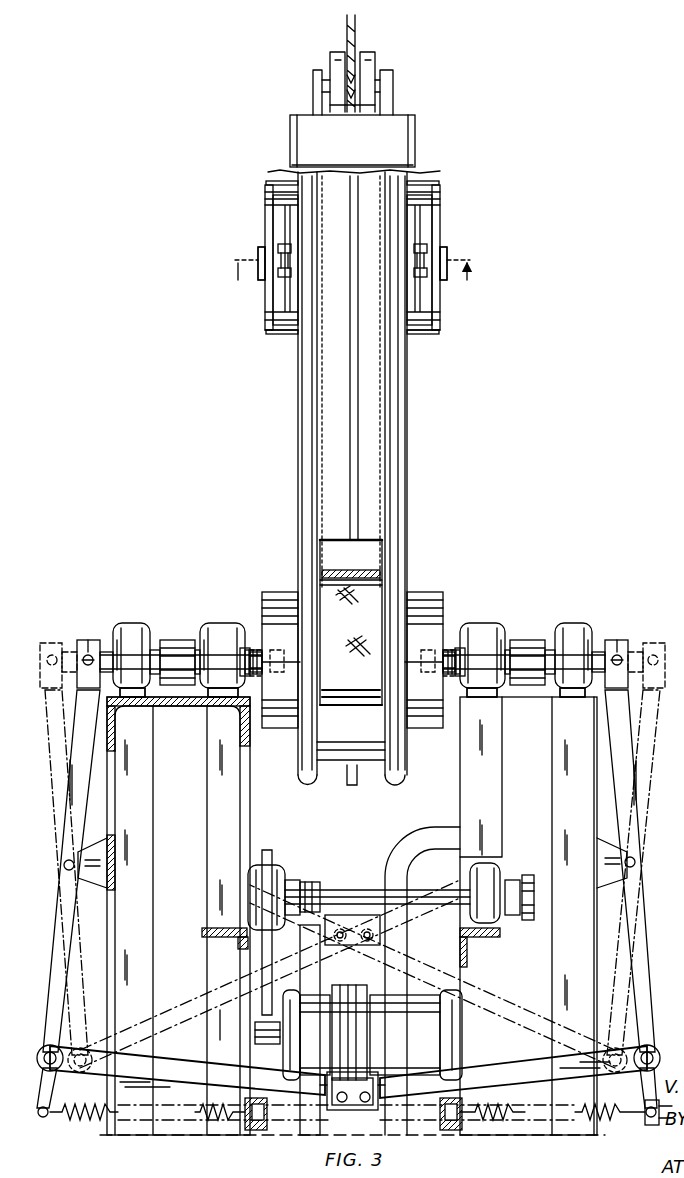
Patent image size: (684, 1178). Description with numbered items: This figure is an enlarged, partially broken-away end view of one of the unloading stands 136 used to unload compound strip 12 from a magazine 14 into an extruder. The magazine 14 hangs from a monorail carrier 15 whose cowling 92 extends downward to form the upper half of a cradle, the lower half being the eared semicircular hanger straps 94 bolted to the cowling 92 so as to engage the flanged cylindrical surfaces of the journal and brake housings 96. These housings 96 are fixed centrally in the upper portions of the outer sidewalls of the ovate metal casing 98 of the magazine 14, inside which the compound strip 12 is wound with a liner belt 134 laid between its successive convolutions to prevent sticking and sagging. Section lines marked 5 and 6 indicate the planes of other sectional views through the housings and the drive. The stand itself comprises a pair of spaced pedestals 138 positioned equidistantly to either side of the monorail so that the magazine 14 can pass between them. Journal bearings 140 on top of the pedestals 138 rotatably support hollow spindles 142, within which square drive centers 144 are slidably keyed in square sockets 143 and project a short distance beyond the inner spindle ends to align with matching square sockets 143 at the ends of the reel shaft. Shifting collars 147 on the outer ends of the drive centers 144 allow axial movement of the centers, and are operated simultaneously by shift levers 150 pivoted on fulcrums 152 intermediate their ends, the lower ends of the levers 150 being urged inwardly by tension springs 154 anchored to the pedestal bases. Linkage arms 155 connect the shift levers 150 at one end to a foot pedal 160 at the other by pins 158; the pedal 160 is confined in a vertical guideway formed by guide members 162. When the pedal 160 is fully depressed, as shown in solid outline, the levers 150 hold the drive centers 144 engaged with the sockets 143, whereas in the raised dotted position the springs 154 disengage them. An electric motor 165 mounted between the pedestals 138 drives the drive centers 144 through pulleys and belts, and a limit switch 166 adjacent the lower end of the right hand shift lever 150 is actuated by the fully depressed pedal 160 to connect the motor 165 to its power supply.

The section line 5- 5 is at (351, 282).
The section line 6- 6 is at (352, 676).
The compound strip 12 is at (385, 563).
The compound strip magazine 14 is at (408, 438).
The monorail carrier 15 is at (418, 144).
The cowling 92 is at (432, 178).
The hanger strap 94 is at (430, 334).
The journal and brake housing 96 is at (265, 232).
The ovate metal casing 98 is at (407, 470).
The liner belt 134 is at (325, 592).
The unloading stand 136 is at (568, 500).
The pedestal 138 is at (438, 808).
The journal bearing 140 is at (568, 698).
The hollow spindle 142 is at (602, 640).
The square socket 143 is at (424, 655).
The square drive center 144 is at (450, 645).
The shifting collar 147 is at (648, 645).
The shift lever 150 is at (635, 752).
The fulcrum 152 is at (636, 862).
The tension spring 154 is at (500, 1125).
The linkage arm 155 is at (522, 1070).
The pin 158 is at (360, 1125).
The foot pedal 160 is at (325, 1090).
The guide member 162 is at (310, 925).
The electric motor 165 is at (445, 1015).
The limit switch 166 is at (640, 1128).